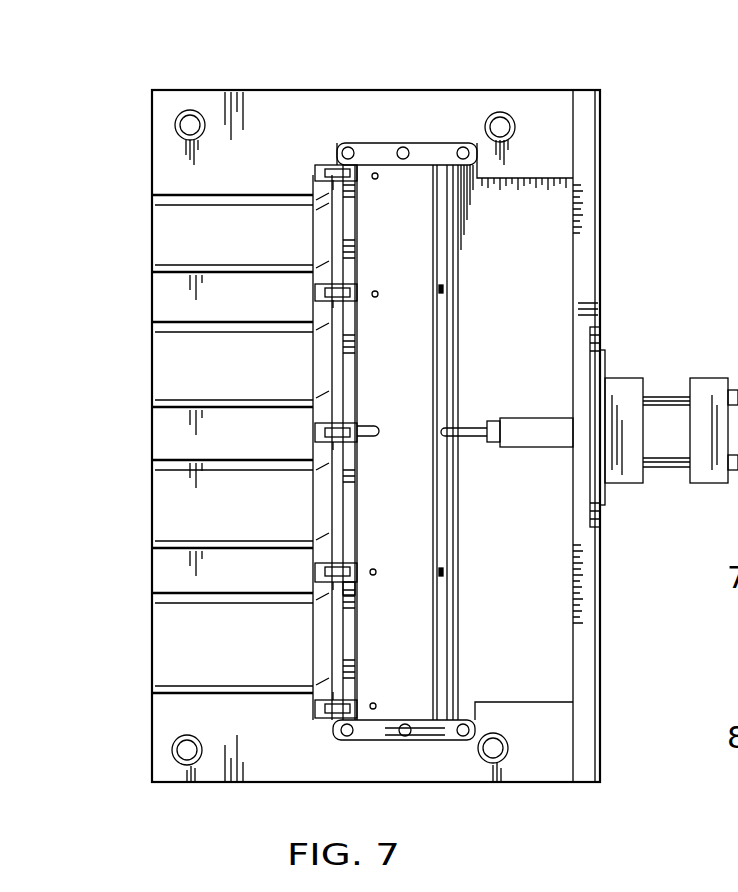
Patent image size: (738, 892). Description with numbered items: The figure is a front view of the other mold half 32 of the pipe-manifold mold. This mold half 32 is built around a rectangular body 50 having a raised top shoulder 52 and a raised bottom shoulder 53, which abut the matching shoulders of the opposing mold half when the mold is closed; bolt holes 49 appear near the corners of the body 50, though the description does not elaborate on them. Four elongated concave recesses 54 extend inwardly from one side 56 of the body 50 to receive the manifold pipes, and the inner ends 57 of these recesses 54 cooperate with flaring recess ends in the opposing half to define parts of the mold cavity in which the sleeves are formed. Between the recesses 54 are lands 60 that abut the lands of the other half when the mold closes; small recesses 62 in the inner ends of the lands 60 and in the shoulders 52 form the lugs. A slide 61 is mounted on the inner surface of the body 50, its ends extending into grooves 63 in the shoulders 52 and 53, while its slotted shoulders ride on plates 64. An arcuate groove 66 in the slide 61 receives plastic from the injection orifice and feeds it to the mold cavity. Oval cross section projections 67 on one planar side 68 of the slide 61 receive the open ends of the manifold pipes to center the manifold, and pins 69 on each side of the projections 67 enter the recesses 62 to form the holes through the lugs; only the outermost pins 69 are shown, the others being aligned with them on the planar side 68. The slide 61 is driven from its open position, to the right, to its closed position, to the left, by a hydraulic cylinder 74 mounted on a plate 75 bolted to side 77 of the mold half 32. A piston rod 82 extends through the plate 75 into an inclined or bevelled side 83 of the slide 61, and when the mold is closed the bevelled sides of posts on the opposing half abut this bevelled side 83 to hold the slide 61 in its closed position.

The other mold half 32 is at (347, 90).
The mounting bolts 49 is at (192, 110).
The rectangular body 50 is at (548, 660).
The raised top shoulder 52 is at (280, 100).
The raised bottom shoulder 53 is at (438, 770).
The elongated concave recesses 54 is at (225, 250).
The side of the body 56 is at (152, 292).
The inner ends of the recesses 57 is at (348, 190).
The lands 60 is at (252, 308).
The slide 61 is at (405, 525).
The small recesses 62 is at (315, 168).
The grooves 63 is at (458, 143).
The plates 64 is at (385, 143).
The arcuate groove 66 is at (378, 422).
The oval cross section projections 67 is at (332, 215).
The planar side of the slide 68 is at (360, 585).
The pins 69 is at (335, 165).
The hydraulic cylinder 74 is at (663, 428).
The plate 75 is at (600, 522).
The side of the mold half 77 is at (575, 205).
The piston rod 82 is at (465, 426).
The bevelled side of the slide 83 is at (445, 512).